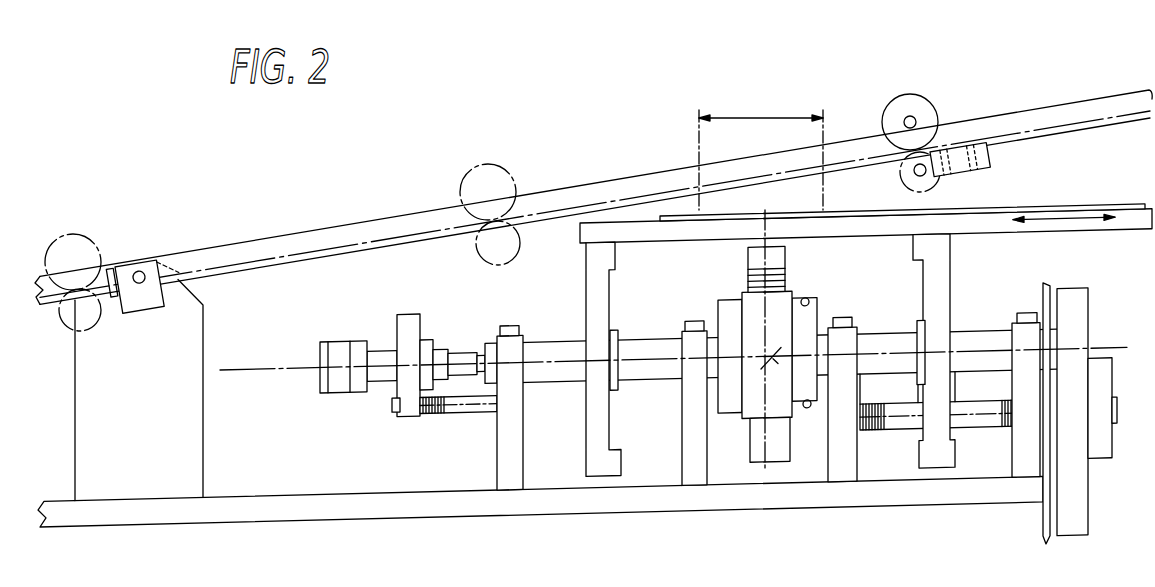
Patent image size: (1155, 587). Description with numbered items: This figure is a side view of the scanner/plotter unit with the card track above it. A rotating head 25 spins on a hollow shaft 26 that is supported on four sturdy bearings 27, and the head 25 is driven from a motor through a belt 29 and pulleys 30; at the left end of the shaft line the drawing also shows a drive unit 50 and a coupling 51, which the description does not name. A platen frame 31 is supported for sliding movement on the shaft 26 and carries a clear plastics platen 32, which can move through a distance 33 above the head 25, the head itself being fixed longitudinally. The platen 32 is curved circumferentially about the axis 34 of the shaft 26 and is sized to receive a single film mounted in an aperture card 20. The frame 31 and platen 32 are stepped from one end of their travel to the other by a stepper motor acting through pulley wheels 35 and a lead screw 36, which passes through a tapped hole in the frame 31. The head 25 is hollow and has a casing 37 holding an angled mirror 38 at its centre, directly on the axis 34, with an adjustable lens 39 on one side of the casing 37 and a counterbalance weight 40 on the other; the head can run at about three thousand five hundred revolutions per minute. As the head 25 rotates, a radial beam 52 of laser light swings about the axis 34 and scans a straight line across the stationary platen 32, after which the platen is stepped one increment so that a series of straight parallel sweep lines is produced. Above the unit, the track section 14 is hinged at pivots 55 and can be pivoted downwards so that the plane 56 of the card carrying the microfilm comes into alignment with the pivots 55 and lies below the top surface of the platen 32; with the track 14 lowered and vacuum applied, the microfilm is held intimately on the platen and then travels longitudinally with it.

The hinged track section 14 is at (575, 180).
The aperture card 20 is at (1005, 233).
The rotating head 25 is at (745, 329).
The hollow shaft 26 is at (545, 396).
The bearings 27 is at (520, 478).
The belt 29 is at (809, 319).
The pulleys 30 is at (840, 320).
The platen frame 31 is at (585, 305).
The platen 32 is at (858, 247).
The distance 33 is at (761, 150).
The axis 34 is at (262, 381).
The pulley wheels 35 is at (1068, 339).
The lead screw 36 is at (975, 430).
The casing 37 is at (750, 412).
The angled mirror 38 is at (770, 382).
The adjustable lens 39 is at (786, 282).
The counterbalance weight 40 is at (782, 478).
The motor 50 is at (340, 355).
The coupling 51 is at (458, 363).
The radial beam 52 is at (766, 251).
The pivots 55 is at (143, 279).
The plane of the card 56 is at (423, 227).